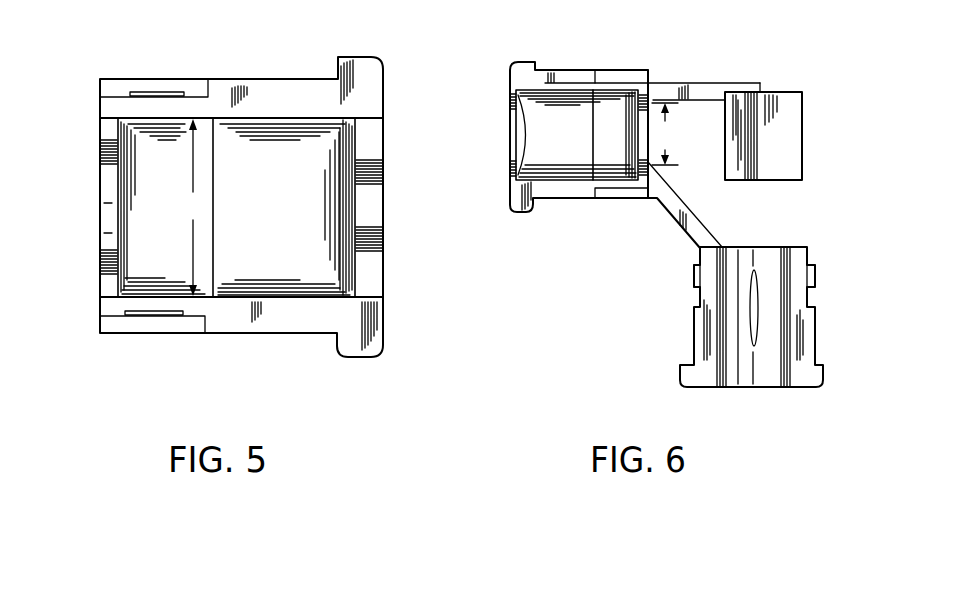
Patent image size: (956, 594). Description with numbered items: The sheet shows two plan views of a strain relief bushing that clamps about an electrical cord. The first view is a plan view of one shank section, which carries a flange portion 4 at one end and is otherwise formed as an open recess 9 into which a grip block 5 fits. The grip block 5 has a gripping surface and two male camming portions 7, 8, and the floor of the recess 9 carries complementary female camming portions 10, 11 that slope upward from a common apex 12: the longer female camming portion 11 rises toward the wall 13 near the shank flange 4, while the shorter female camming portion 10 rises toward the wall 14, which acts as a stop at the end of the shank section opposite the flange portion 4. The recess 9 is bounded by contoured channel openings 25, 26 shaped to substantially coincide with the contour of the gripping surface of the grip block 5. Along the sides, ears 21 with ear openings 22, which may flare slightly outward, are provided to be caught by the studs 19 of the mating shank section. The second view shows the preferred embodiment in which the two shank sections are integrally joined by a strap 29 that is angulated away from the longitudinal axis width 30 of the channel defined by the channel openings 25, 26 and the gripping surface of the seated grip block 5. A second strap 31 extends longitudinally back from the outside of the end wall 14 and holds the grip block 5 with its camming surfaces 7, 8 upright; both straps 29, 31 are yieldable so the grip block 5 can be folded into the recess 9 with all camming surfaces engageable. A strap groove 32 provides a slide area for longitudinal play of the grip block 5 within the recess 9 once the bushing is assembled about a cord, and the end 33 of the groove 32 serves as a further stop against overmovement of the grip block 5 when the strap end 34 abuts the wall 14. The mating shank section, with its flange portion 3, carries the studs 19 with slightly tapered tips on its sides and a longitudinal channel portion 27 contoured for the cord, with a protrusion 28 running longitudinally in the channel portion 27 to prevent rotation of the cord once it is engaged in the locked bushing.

In FIG. 6, the flange portion 3 is at (820, 375).
In FIG. 5, the flange portion 4 is at (377, 73).
In FIG. 6, the flange portion 4 is at (524, 210).
In FIG. 6, the grip block 5 is at (802, 137).
In FIG. 6, the male camming portion 7 is at (783, 123).
In FIG. 6, the male camming portion 8 is at (738, 135).
In FIG. 5, the recess 9 is at (243, 173).
In FIG. 5, the female camming portion 10 is at (160, 193).
In FIG. 5, the female camming portion 11 is at (285, 211).
In FIG. 5, the apex 12 is at (216, 124).
In FIG. 5, the wall 13 is at (332, 185).
In FIG. 5, the wall 14 is at (108, 125).
In FIG. 6, the studs 19 is at (695, 271).
In FIG. 5, the ears 21 is at (113, 83).
In FIG. 5, the ear openings 22 is at (163, 93).
In FIG. 5, the channel opening 25 is at (373, 207).
In FIG. 5, the channel opening 26 is at (108, 220).
In FIG. 6, the longitudinal channel portion 27 is at (775, 347).
In FIG. 6, the protrusion 28 is at (757, 320).
In FIG. 6, the strap 29 is at (682, 227).
In FIG. 5, the longitudinal axis width 30 is at (194, 207).
In FIG. 6, the longitudinal axis width 30 is at (665, 134).
In FIG. 6, the strap 31 is at (667, 87).
In FIG. 6, the strap groove 32 is at (580, 82).
In FIG. 6, the end of the groove 33 is at (560, 83).
In FIG. 6, the strap end 34 is at (760, 87).